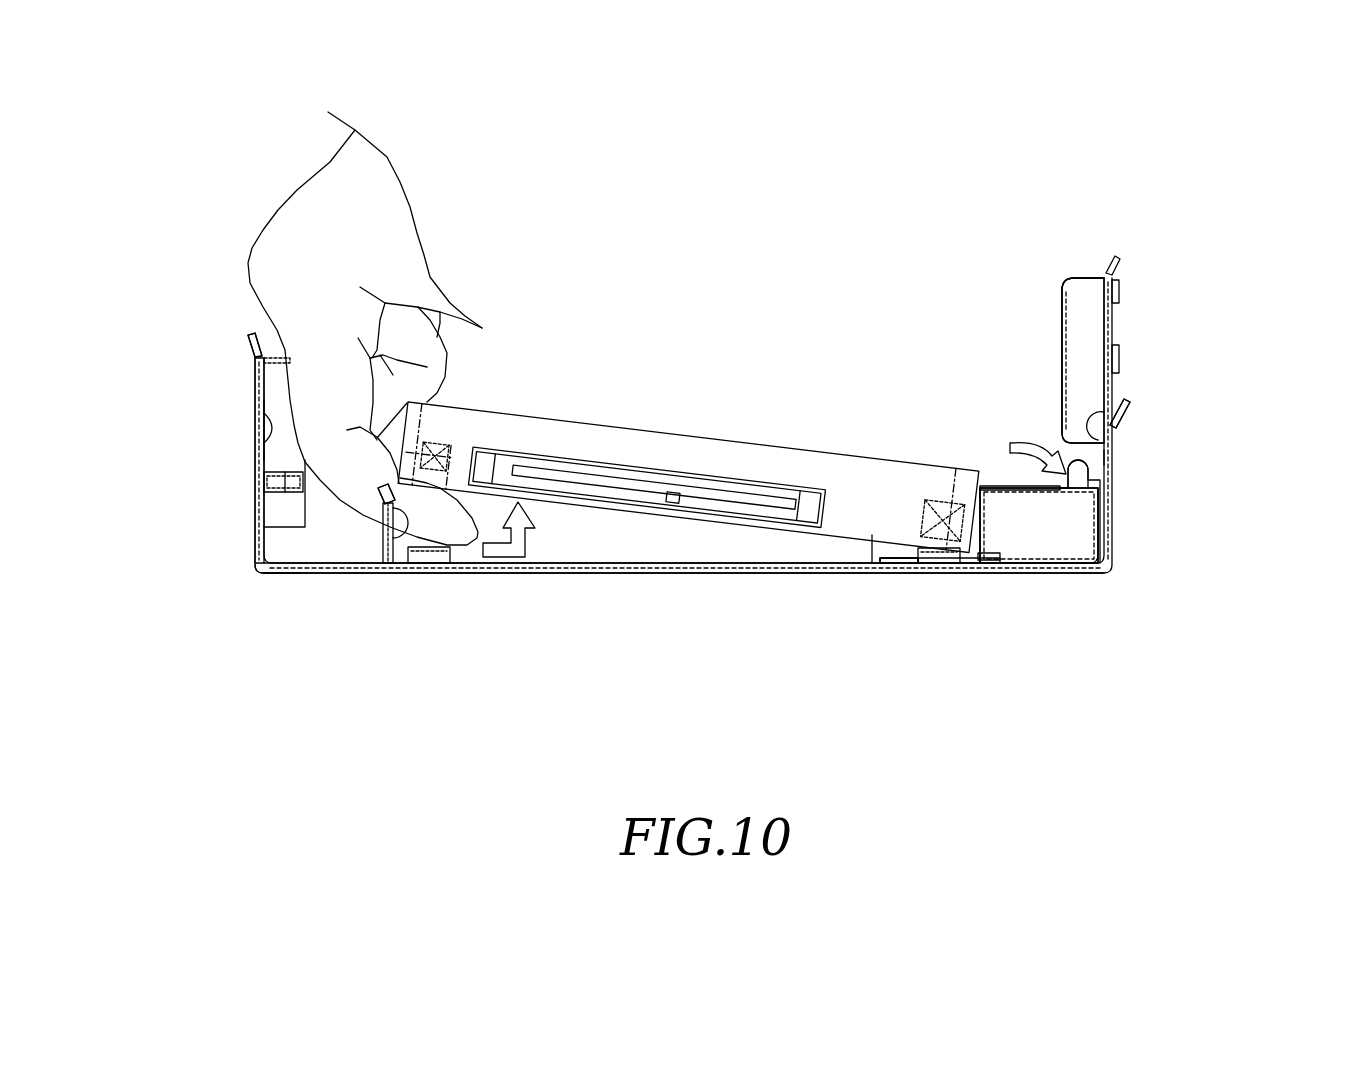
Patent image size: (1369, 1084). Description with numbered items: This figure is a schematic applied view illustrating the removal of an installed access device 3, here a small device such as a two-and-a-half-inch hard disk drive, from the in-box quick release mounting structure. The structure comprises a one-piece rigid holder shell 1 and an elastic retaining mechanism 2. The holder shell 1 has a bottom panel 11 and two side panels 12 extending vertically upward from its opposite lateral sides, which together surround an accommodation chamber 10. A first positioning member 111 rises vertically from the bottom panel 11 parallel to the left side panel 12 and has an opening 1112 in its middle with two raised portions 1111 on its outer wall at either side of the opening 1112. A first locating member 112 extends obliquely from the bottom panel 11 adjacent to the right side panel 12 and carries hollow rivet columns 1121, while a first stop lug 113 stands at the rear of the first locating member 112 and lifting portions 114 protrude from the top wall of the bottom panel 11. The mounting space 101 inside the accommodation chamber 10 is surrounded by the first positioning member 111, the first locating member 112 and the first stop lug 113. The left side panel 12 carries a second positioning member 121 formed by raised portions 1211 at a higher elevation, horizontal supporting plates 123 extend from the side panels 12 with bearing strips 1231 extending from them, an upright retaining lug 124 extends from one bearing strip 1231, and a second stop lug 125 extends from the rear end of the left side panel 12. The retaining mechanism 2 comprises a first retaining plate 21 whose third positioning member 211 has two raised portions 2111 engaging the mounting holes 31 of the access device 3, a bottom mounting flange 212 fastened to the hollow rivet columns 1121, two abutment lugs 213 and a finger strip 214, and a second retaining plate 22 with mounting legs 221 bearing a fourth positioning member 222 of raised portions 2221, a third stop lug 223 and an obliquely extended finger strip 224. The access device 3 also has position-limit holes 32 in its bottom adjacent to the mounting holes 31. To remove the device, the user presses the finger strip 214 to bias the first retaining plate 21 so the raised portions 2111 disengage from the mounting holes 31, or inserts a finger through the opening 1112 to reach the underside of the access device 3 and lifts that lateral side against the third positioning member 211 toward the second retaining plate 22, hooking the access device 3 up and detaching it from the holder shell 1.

The holder shell 1 is at (540, 600).
The accommodation chamber 10 is at (268, 447).
The bottom panel 11 is at (677, 572).
The mounting space 101 is at (605, 570).
The first positioning member 111 is at (336, 645).
The raised portions 1111 is at (390, 523).
The opening 1112 is at (298, 568).
The first locating member 112 is at (930, 692).
The hollow rivet columns 1121 is at (917, 562).
The first stop lug 113 is at (872, 540).
The lifting portions 114 is at (427, 560).
The side panels 12 is at (263, 543).
The second positioning member 121 is at (130, 410).
The raised portions 1211 is at (264, 415).
The horizontal supporting plates 123 is at (268, 493).
The bearing strips 1231 is at (273, 478).
The upright retaining lug 124 is at (1082, 470).
The second stop lug 125 is at (273, 386).
The retaining mechanism 2 is at (1198, 314).
The first retaining plate 21 is at (980, 505).
The third positioning member 211 is at (1145, 609).
The raised portions 2111 is at (980, 527).
The bottom mounting flange 212 is at (889, 565).
The abutment lugs 213 is at (995, 558).
The finger strip 214 is at (1037, 491).
The second retaining plate 22 is at (1110, 318).
The mounting legs 221 is at (1106, 457).
The fourth positioning member 222 is at (1243, 413).
The raised portions 2221 is at (1104, 423).
The third stop lug 223 is at (1086, 287).
The finger strip 224 is at (1118, 265).
The access device 3 is at (850, 468).
The mounting holes 31 is at (958, 475).
The position-limit holes 32 is at (942, 557).